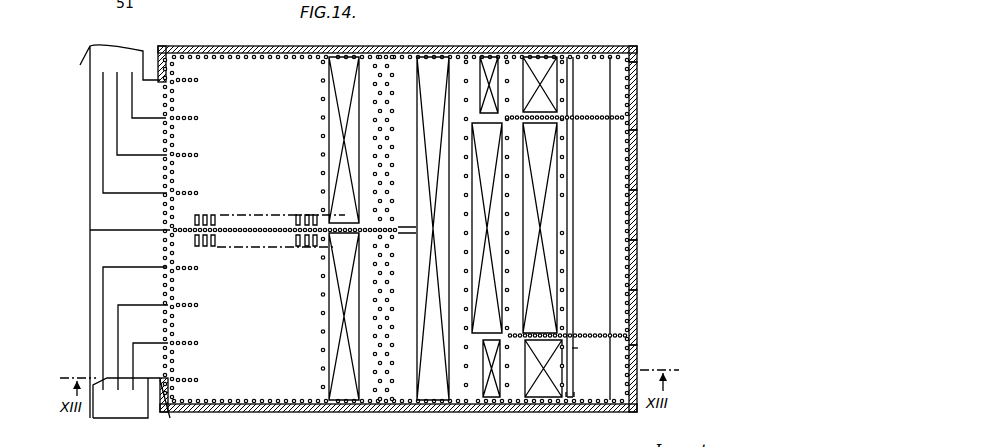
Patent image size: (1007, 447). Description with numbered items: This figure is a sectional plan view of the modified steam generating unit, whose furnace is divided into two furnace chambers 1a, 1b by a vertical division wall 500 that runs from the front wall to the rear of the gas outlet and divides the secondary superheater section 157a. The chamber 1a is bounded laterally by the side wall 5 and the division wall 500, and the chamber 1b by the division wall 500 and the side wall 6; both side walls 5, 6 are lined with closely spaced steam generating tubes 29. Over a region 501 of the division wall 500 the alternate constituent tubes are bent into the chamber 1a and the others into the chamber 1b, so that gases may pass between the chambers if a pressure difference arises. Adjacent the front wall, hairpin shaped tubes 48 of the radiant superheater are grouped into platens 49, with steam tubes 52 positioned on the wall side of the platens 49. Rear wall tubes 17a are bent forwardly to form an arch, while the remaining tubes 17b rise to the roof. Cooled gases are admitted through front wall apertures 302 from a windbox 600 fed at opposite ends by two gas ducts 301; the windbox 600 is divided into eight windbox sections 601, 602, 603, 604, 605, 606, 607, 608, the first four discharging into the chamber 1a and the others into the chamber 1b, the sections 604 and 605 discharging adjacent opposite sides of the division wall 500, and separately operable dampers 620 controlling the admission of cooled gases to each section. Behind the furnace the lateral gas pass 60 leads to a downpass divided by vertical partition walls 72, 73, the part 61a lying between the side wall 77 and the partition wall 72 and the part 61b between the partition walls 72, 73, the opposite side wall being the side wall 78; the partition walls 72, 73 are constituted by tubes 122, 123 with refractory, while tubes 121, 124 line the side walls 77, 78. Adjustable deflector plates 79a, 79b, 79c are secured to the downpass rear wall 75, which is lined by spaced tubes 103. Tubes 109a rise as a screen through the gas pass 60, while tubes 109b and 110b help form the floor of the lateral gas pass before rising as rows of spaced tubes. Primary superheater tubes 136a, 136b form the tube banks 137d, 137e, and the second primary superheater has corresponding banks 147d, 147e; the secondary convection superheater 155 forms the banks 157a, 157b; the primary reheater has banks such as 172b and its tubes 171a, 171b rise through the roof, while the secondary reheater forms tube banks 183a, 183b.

The furnace chamber 1a is at (258, 154).
The furnace chamber 1b is at (260, 329).
The side wall 5 is at (292, 47).
The side wall 6 is at (305, 402).
The alternate rear wall tubes 17a is at (323, 170).
The remaining rear wall tubes 17b is at (392, 232).
The steam generating tubes 29 is at (243, 54).
The hairpin shaped tubes 48 is at (193, 120).
The tube platens 49 is at (200, 193).
The steam tubes 52 is at (172, 182).
The lateral gas pass 60 is at (462, 390).
The downpass part 61a is at (603, 88).
The downpass part 61b is at (601, 210).
The partition wall 72 is at (597, 120).
The partition wall 73 is at (586, 352).
The downpass rear wall 75 is at (628, 203).
The side wall of downpass 77 is at (622, 44).
The side wall of downpass 78 is at (617, 403).
The adjustable deflector plate 79a is at (617, 72).
The adjustable deflector plate 79b is at (630, 146).
The adjustable deflector plate 79c is at (622, 347).
The spaced tubes 103 is at (636, 276).
The alternate tubes 109a is at (510, 150).
The remaining tubes 109b is at (507, 183).
The remaining by-pass front wall tubes 110b is at (393, 130).
The wall tubes 121 is at (475, 47).
The wall tubes 122 is at (600, 116).
The wall tubes 123 is at (600, 333).
The wall tubes 124 is at (465, 233).
The alternate pairs of superheater tubes 136a is at (589, 386).
The remaining superheater tubes 136b is at (552, 399).
The fourth tube bank 137d is at (556, 394).
The tube bank 137e is at (490, 388).
The tube bank 147d is at (543, 63).
The tube bank 147e is at (487, 60).
The secondary convection superheater 155 is at (340, 372).
The first tube bank 157a is at (327, 307).
The second tube bank 157b is at (427, 230).
The alternate pairs of reheater tubes 171a is at (570, 276).
The remaining reheater tubes 171b is at (571, 297).
The reheater tube bank 172b is at (342, 213).
The secondary reheater tube bank 183a is at (482, 315).
The secondary reheater tube bank 183b is at (553, 305).
The gas ducts 301 is at (80, 62).
The front wall apertures 302 is at (170, 110).
The division wall 500 is at (323, 240).
The region of division wall 501 is at (265, 232).
The windbox 600 is at (160, 185).
The windbox section 601 is at (150, 112).
The windbox section 602 is at (148, 147).
The windbox section 603 is at (115, 198).
The windbox section 604 is at (158, 225).
The windbox section 605 is at (173, 245).
The windbox section 606 is at (150, 304).
The windbox section 607 is at (162, 328).
The windbox section 608 is at (175, 357).
The dampers 620 is at (95, 72).